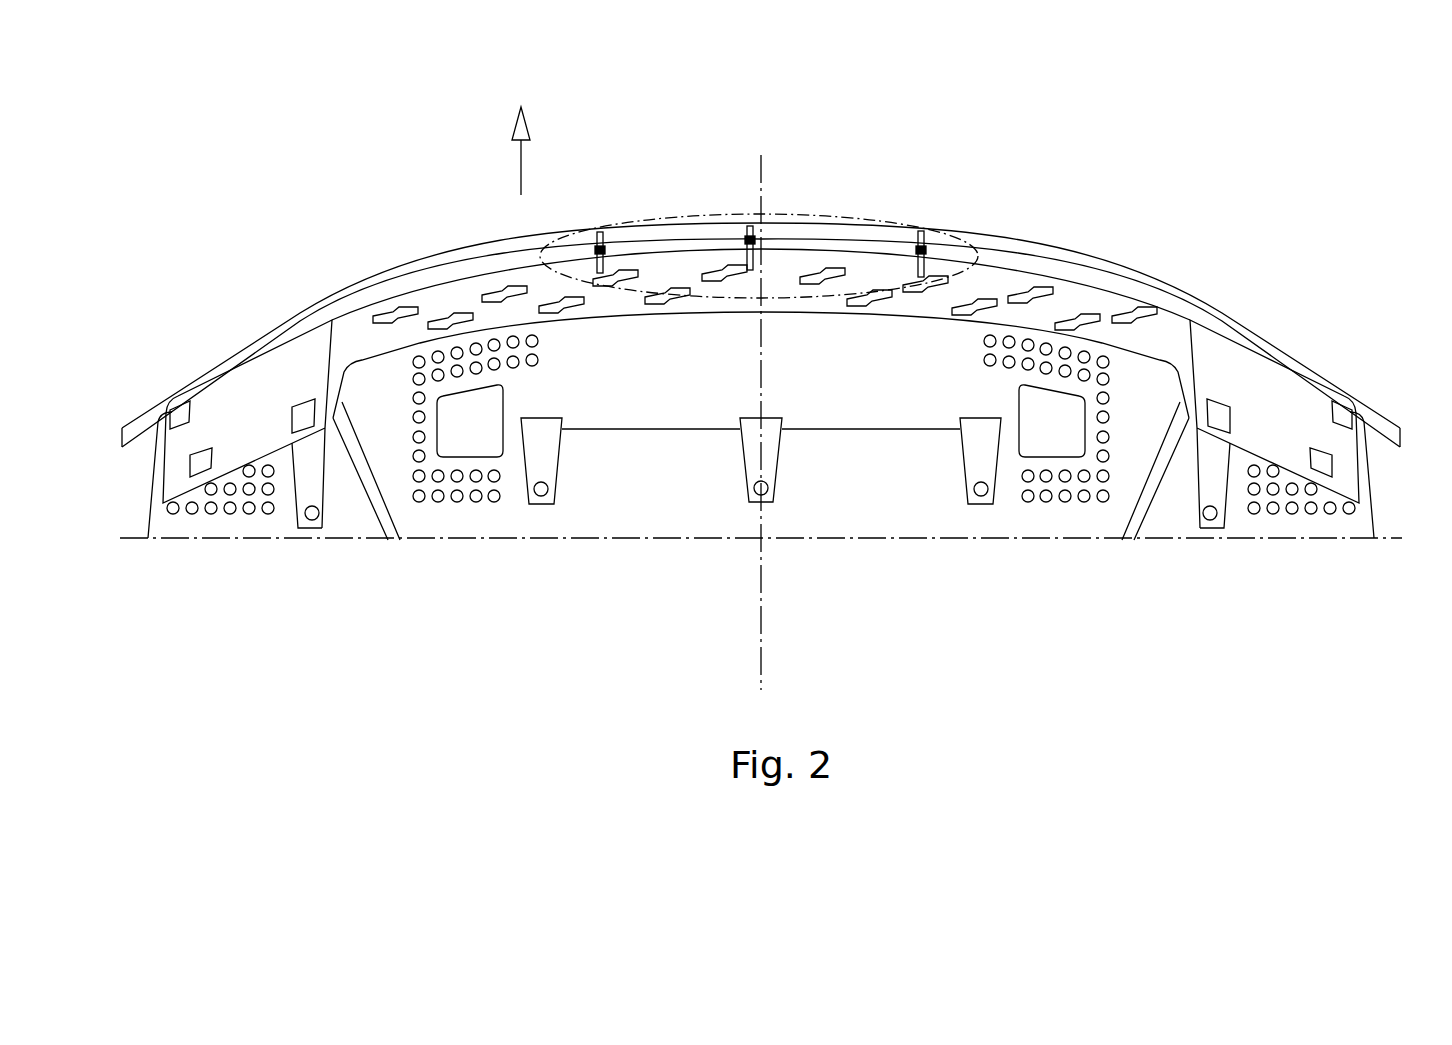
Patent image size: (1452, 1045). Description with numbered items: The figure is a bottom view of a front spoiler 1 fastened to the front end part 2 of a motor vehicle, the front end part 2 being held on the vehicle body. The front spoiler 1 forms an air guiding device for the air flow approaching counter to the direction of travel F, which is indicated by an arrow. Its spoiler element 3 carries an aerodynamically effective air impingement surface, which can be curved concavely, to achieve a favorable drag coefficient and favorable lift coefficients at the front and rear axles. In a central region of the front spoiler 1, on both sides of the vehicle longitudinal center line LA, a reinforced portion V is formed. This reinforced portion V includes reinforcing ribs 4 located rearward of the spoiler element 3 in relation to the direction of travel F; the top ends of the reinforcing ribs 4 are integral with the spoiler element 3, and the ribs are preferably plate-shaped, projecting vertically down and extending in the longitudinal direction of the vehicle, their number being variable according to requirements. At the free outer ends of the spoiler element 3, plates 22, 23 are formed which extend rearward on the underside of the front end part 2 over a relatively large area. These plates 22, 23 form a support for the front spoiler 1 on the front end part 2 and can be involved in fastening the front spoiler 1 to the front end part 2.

The front spoiler 1 is at (1252, 318).
The front end part 2 is at (1161, 330).
The spoiler element 3 is at (1055, 258).
The reinforcing ribs 4 is at (599, 250).
The plate 22 is at (230, 405).
The plate 23 is at (1293, 397).
The direction of travel F is at (521, 172).
The reinforced portion V is at (760, 522).
The vehicle longitudinal center line LA is at (759, 658).